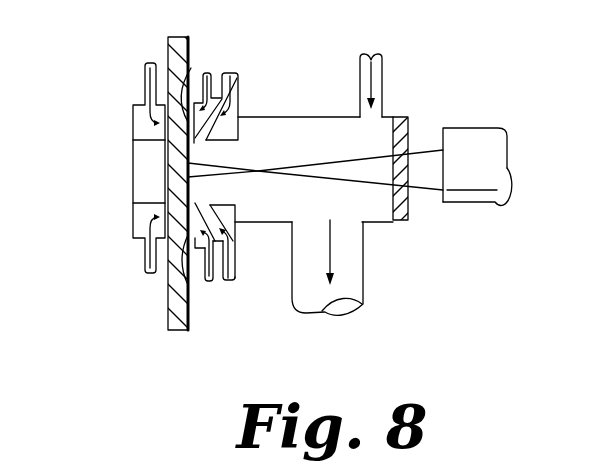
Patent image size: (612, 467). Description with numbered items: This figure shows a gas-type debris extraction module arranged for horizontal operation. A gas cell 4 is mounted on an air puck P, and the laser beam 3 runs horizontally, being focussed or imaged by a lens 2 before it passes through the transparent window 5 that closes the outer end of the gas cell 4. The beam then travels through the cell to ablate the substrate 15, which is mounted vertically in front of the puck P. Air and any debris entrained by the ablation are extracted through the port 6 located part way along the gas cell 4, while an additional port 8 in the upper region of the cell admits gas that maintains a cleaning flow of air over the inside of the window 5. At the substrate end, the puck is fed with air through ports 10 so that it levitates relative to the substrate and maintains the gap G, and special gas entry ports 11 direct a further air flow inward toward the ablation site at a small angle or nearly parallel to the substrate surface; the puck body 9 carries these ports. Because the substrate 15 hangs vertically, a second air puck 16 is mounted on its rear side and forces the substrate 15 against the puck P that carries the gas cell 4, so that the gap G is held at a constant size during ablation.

The lens 2 is at (472, 177).
The laser beam 3 is at (428, 177).
The gas cell 4 is at (275, 117).
The transparent window 5 is at (395, 222).
The port 6 is at (347, 280).
The additional port 8 is at (373, 74).
The air puck 9 is at (233, 211).
The ports 10 is at (210, 281).
The gas entry ports 11 is at (240, 86).
The substrate 15 is at (168, 298).
The second air puck 16 is at (135, 218).
The air puck P is at (191, 68).
The gap G is at (185, 282).